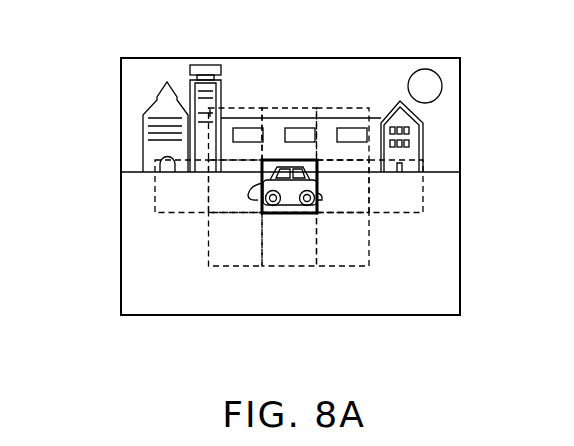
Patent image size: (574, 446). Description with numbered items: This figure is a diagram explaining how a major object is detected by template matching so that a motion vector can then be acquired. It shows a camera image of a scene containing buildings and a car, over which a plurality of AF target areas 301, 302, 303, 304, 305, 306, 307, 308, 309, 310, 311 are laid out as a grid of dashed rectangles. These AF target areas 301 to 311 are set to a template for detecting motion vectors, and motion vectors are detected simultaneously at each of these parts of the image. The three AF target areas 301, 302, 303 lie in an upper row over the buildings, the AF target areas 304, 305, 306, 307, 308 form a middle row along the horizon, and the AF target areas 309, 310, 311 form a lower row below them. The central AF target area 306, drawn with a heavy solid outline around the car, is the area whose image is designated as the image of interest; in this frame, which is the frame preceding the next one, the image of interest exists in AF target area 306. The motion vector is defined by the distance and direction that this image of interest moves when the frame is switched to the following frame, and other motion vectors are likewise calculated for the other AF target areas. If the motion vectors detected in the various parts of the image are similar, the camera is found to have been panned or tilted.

The AF target area 301 is at (237, 113).
The AF target area 302 is at (293, 110).
The AF target area 303 is at (340, 113).
The AF target area 304 is at (185, 188).
The AF target area 305 is at (233, 188).
The AF target area 306 is at (292, 183).
The AF target area 307 is at (342, 190).
The AF target area 308 is at (393, 187).
The AF target area 309 is at (233, 238).
The AF target area 310 is at (287, 238).
The AF target area 311 is at (340, 238).